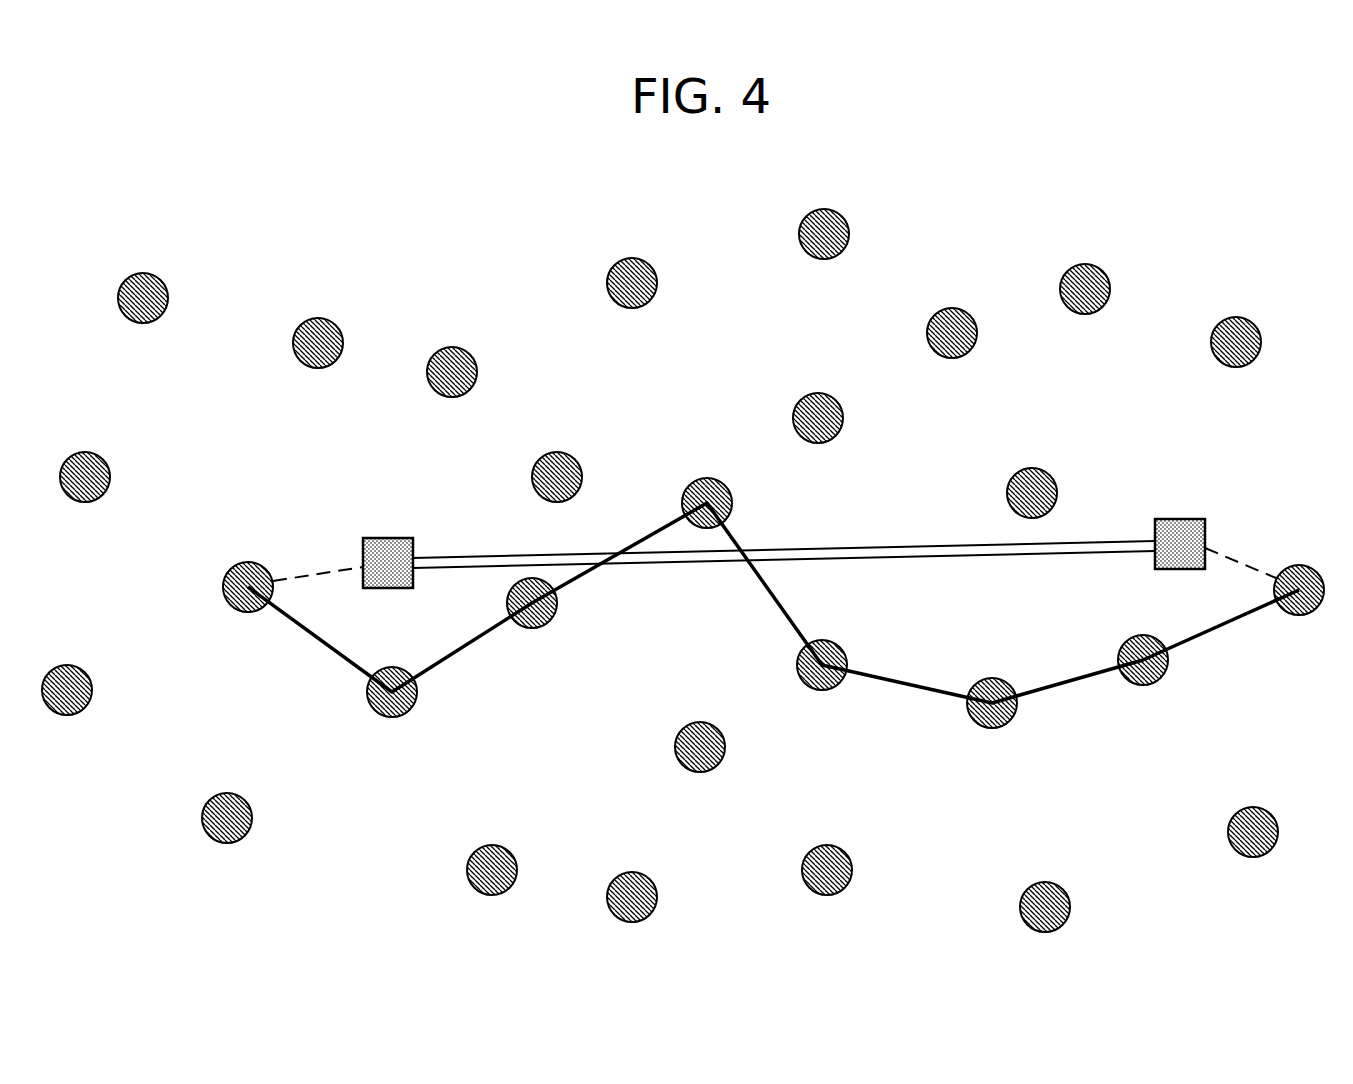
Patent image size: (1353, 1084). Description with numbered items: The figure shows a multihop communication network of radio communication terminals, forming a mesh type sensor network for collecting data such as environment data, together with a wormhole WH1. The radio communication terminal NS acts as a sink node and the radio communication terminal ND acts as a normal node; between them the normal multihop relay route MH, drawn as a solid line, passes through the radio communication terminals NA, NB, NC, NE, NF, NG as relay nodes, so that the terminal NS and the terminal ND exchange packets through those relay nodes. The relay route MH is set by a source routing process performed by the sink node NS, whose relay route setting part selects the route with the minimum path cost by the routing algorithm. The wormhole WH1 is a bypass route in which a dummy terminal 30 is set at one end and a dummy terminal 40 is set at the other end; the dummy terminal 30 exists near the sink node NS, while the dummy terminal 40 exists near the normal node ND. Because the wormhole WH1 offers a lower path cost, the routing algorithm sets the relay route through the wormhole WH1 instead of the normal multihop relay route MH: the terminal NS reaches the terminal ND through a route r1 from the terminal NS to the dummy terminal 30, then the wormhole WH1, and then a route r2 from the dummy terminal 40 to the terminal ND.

The radio communication terminal NS is at (236, 576).
The radio communication terminal NA is at (386, 700).
The radio communication terminal NB is at (540, 620).
The radio communication terminal NC is at (706, 492).
The radio communication terminal ND is at (1304, 612).
The radio communication terminal NE is at (823, 687).
The radio communication terminal NF is at (993, 725).
The radio communication terminal NG is at (1146, 683).
The multihop relay route MH is at (447, 660).
The wormhole WH1 is at (909, 546).
The dummy terminal 30 is at (389, 548).
The dummy terminal 40 is at (1172, 530).
The route r1 is at (304, 575).
The route r2 is at (1247, 567).